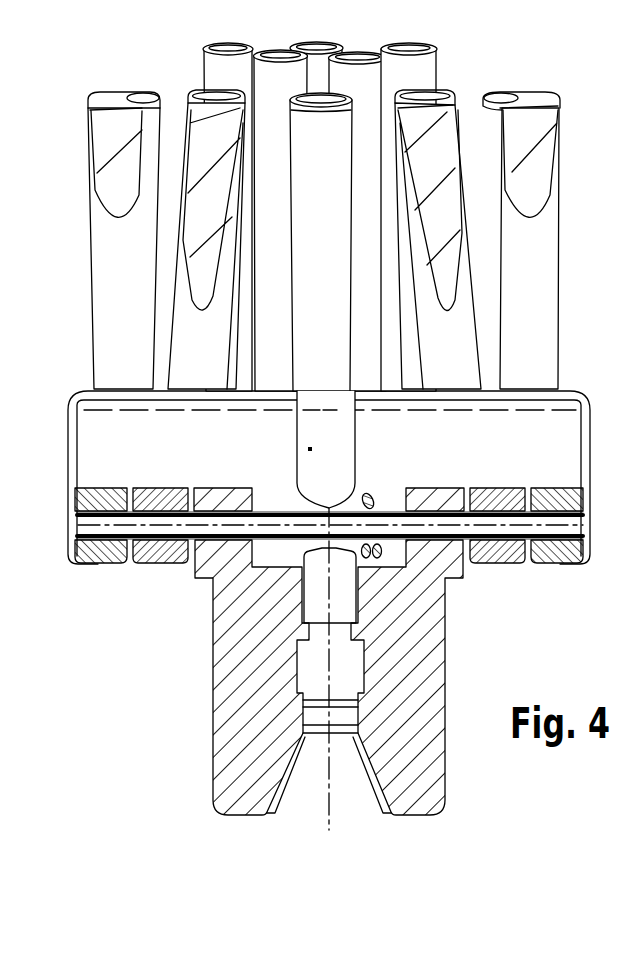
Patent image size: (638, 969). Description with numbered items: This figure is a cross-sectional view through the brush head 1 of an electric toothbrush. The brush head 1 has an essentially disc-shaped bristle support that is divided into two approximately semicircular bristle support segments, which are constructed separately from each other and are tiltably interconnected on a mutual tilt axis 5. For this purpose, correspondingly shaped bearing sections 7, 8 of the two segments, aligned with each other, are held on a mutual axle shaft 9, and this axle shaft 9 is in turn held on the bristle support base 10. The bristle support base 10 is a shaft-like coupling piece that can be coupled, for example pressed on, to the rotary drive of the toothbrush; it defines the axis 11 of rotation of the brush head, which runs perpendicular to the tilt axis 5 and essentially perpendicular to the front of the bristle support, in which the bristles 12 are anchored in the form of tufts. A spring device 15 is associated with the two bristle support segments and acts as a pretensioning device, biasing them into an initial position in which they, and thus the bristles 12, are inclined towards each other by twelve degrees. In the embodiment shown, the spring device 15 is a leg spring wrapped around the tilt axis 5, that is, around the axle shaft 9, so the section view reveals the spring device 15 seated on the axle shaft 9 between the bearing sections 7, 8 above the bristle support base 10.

The brush head 1 is at (44, 150).
The bristles 12 is at (463, 74).
The axis of rotation 11 is at (325, 430).
The tilt axis 5 is at (288, 524).
The spring device 15 is at (374, 496).
The axle shaft 9 is at (74, 531).
The bearing section 8 is at (97, 564).
The bearing section 7 is at (159, 560).
The bristle support base 10 is at (220, 661).